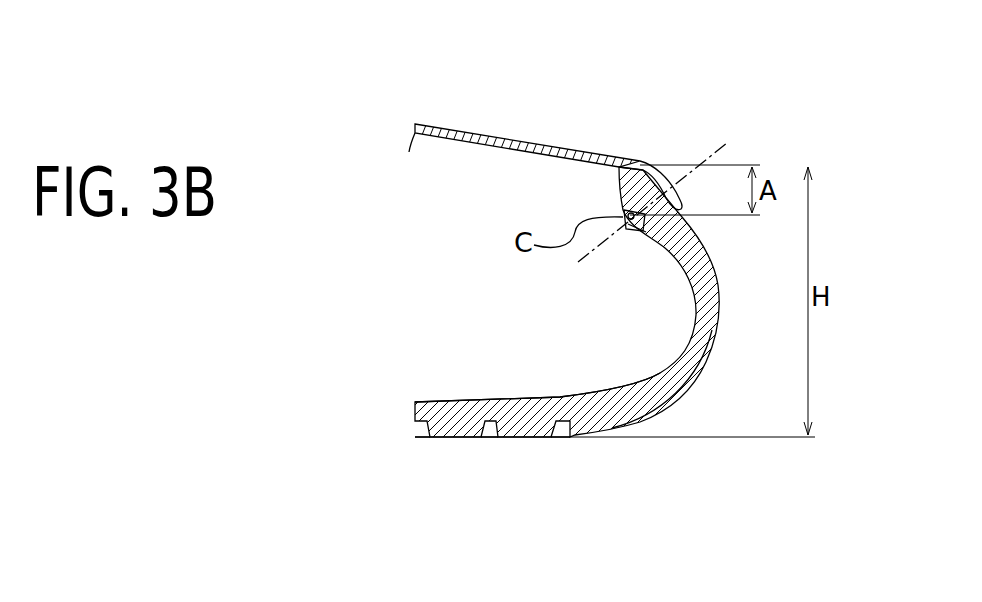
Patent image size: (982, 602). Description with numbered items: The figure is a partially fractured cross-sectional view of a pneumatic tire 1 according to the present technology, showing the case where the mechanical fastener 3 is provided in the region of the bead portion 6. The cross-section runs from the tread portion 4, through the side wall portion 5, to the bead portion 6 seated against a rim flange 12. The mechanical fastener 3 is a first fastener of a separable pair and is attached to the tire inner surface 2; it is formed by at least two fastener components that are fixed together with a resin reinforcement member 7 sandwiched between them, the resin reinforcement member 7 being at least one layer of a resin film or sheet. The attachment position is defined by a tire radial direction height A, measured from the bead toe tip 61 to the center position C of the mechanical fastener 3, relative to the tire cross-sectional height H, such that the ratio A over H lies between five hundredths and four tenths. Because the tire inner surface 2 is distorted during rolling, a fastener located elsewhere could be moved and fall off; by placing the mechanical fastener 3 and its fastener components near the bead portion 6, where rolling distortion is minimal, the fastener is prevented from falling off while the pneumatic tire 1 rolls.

The pneumatic tire 1 is at (447, 440).
The tire inner surface 2 is at (642, 383).
The mechanical fastener 3 is at (630, 232).
The tread portion 4 is at (593, 430).
The side wall portion 5 is at (712, 303).
The bead portion 6 is at (646, 164).
The resin reinforcement member 7 is at (640, 232).
The rim flange 12 is at (493, 135).
The bead toe tip 61 is at (615, 170).